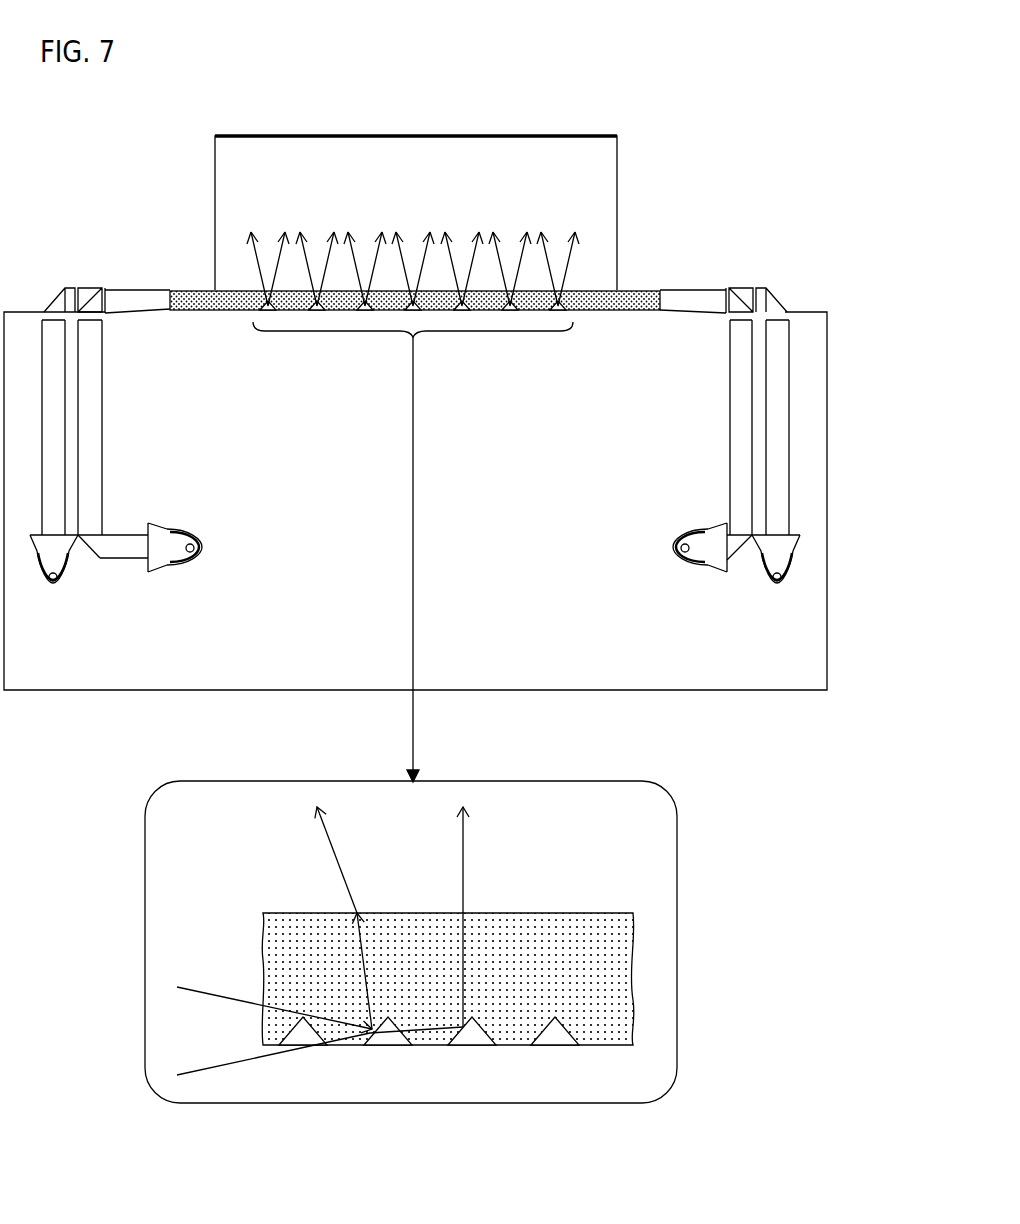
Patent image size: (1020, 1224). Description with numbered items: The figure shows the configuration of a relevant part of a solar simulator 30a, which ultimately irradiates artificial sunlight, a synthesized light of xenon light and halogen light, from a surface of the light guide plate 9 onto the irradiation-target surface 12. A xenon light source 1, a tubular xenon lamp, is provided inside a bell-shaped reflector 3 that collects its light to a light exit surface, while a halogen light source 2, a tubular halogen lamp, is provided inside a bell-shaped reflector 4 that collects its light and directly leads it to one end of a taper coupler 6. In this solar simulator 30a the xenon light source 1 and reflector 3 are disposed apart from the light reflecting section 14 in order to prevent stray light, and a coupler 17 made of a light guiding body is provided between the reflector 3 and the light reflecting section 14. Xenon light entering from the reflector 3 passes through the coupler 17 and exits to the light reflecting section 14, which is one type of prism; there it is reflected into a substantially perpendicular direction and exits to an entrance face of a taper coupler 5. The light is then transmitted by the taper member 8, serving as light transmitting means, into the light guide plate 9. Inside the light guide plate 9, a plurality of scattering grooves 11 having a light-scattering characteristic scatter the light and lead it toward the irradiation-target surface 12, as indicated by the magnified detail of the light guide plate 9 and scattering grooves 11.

The xenon light source 1 is at (202, 548).
The halogen light source 2 is at (54, 584).
The reflector 3 is at (179, 568).
The reflector 4 is at (35, 571).
The taper coupler 5 is at (96, 400).
The taper coupler 6 is at (48, 400).
The taper member 8 is at (136, 300).
The light guide plate 9 is at (183, 300).
The scattering grooves 11 is at (460, 1036).
The irradiation-target surface 12 is at (457, 134).
The light reflecting section 14 is at (93, 557).
The coupler 17 is at (125, 559).
The solar simulator 30a is at (736, 146).